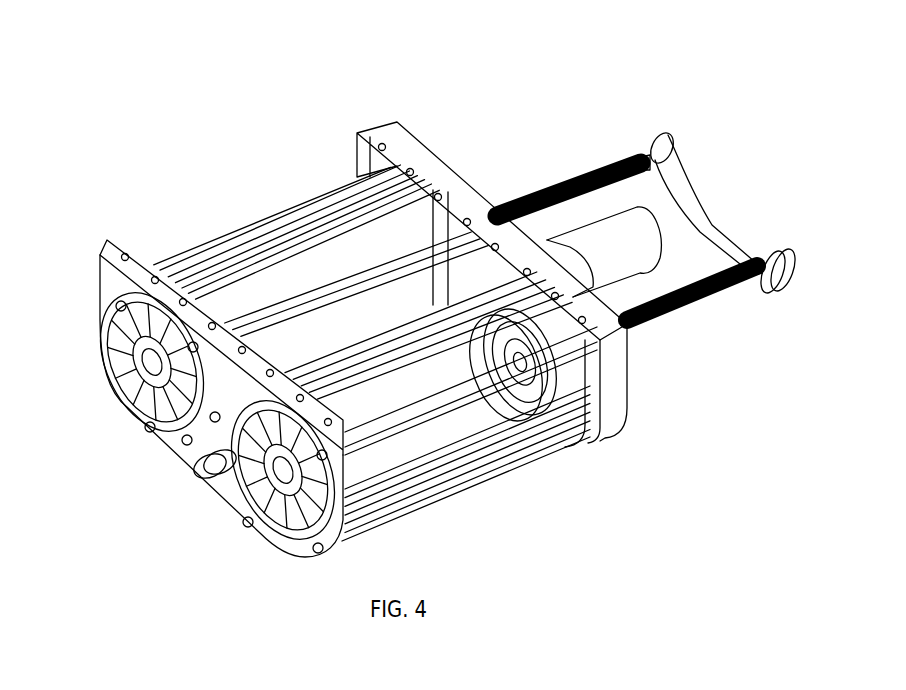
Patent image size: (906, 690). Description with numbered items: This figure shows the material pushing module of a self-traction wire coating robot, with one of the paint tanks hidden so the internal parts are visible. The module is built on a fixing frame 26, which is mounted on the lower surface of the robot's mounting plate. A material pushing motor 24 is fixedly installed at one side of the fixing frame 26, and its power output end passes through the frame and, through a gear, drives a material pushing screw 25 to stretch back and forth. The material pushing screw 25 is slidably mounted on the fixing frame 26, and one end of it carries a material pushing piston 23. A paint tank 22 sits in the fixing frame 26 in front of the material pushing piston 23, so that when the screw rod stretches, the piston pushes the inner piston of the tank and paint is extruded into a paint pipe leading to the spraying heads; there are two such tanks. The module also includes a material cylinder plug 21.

The material cylinder plug 21 is at (122, 232).
The paint tank 22 is at (272, 291).
The material pushing piston 23 is at (398, 121).
The material pushing motor 24 is at (600, 247).
The material pushing screw 25 is at (703, 280).
The fixing frame 26 is at (600, 437).